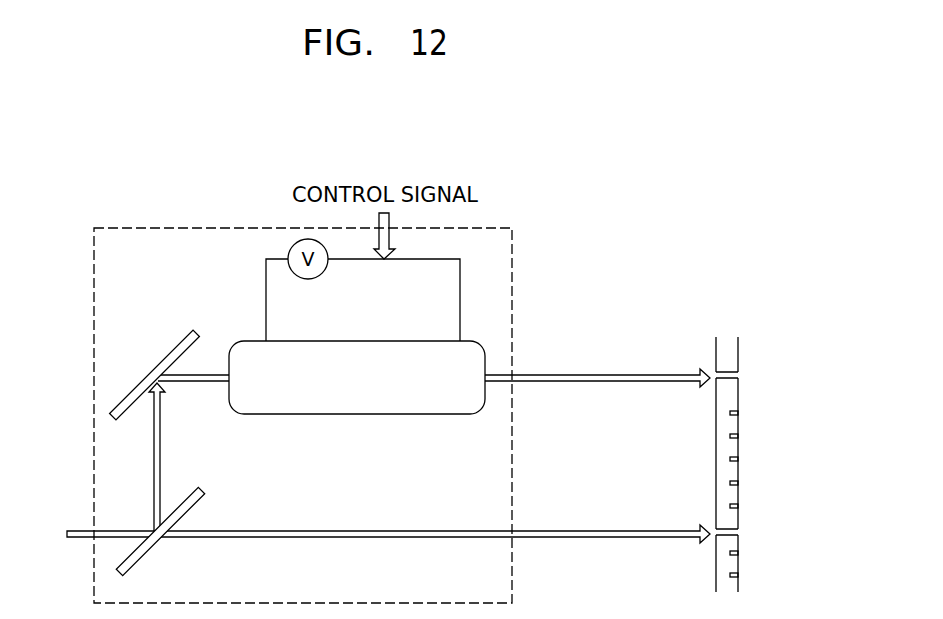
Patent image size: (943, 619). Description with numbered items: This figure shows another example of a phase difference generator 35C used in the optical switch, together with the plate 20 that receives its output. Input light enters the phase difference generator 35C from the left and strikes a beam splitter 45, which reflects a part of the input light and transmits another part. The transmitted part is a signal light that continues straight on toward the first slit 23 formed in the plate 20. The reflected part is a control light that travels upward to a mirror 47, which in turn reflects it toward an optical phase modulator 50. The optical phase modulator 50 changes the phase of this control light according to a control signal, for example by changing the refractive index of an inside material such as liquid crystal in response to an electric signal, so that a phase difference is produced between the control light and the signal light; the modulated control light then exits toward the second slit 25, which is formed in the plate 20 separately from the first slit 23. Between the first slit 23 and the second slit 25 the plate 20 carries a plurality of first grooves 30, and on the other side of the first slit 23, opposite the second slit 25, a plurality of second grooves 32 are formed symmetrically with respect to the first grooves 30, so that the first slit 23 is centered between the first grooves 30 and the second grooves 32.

The phase difference generator 35C is at (512, 255).
The optical phase modulator 50 is at (358, 414).
The mirror 47 is at (178, 347).
The beam splitter 45 is at (143, 557).
The plate 20 is at (763, 430).
The second slit 25 is at (738, 375).
The first grooves 30 is at (738, 459).
The first slit 23 is at (738, 531).
The second grooves 32 is at (738, 576).